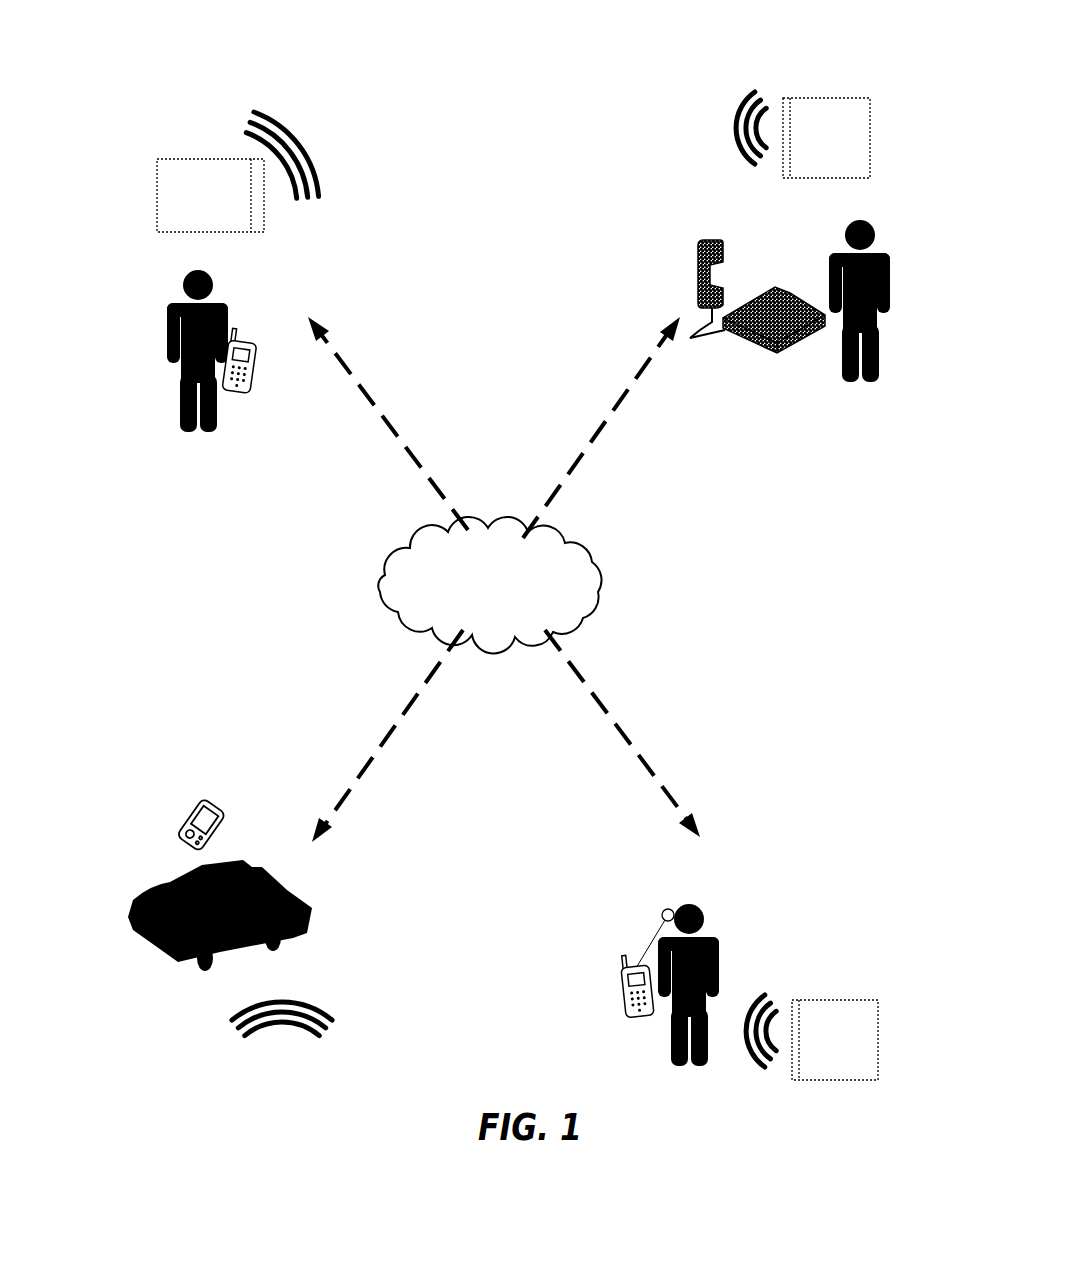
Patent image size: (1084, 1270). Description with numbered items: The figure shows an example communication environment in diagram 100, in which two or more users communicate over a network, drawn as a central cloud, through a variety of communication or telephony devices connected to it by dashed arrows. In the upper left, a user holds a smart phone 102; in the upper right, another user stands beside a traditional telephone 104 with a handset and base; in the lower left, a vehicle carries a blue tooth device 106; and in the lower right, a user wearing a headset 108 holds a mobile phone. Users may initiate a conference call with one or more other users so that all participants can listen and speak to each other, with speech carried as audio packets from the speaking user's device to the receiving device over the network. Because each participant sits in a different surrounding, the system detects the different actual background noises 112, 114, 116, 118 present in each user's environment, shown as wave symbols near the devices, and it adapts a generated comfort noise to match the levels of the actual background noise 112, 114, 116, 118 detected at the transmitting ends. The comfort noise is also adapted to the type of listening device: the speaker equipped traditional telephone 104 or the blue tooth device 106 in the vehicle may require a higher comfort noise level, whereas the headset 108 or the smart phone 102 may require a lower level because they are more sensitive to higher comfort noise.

The diagram 100 is at (678, 50).
The smart phone 102 is at (245, 291).
The traditional telephone 104 is at (694, 212).
The blue tooth device 106 is at (216, 774).
The headset 108 is at (677, 893).
The actual background noise 112 is at (310, 140).
The actual background noise 114 is at (720, 131).
The actual background noise 116 is at (283, 978).
The actual background noise 118 is at (783, 972).